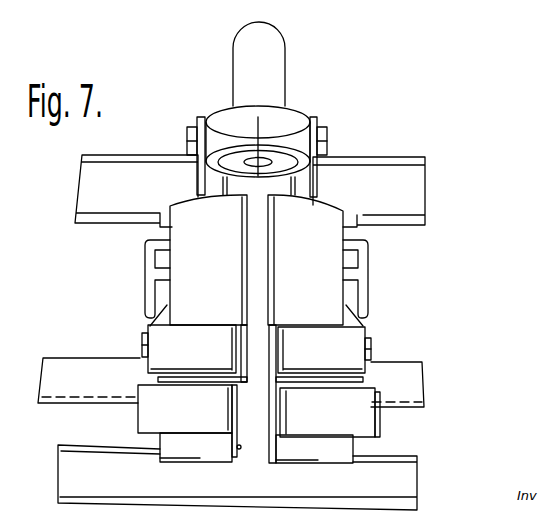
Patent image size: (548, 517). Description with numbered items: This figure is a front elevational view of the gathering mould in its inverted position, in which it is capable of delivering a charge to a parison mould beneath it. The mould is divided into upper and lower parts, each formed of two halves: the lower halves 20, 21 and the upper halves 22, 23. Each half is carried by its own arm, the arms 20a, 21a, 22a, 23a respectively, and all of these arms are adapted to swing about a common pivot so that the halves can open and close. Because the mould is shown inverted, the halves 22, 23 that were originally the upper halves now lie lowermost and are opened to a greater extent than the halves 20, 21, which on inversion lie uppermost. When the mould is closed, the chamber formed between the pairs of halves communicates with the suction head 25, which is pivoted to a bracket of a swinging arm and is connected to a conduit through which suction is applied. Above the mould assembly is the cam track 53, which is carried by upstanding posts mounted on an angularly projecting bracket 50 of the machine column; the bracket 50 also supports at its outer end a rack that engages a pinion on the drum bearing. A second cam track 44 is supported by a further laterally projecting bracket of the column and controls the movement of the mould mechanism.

The lower mould half 20 is at (335, 305).
The lower mould half 21 is at (187, 227).
The arm 20a is at (355, 352).
The arm 21a is at (162, 340).
The upper mould half 22 is at (341, 450).
The upper mould half 23 is at (187, 448).
The arm 22a is at (365, 407).
The arm 23a is at (157, 402).
The suction head 25 is at (272, 127).
The second cam track 44 is at (67, 358).
The bracket 50 is at (77, 472).
The cam track 53 is at (365, 178).